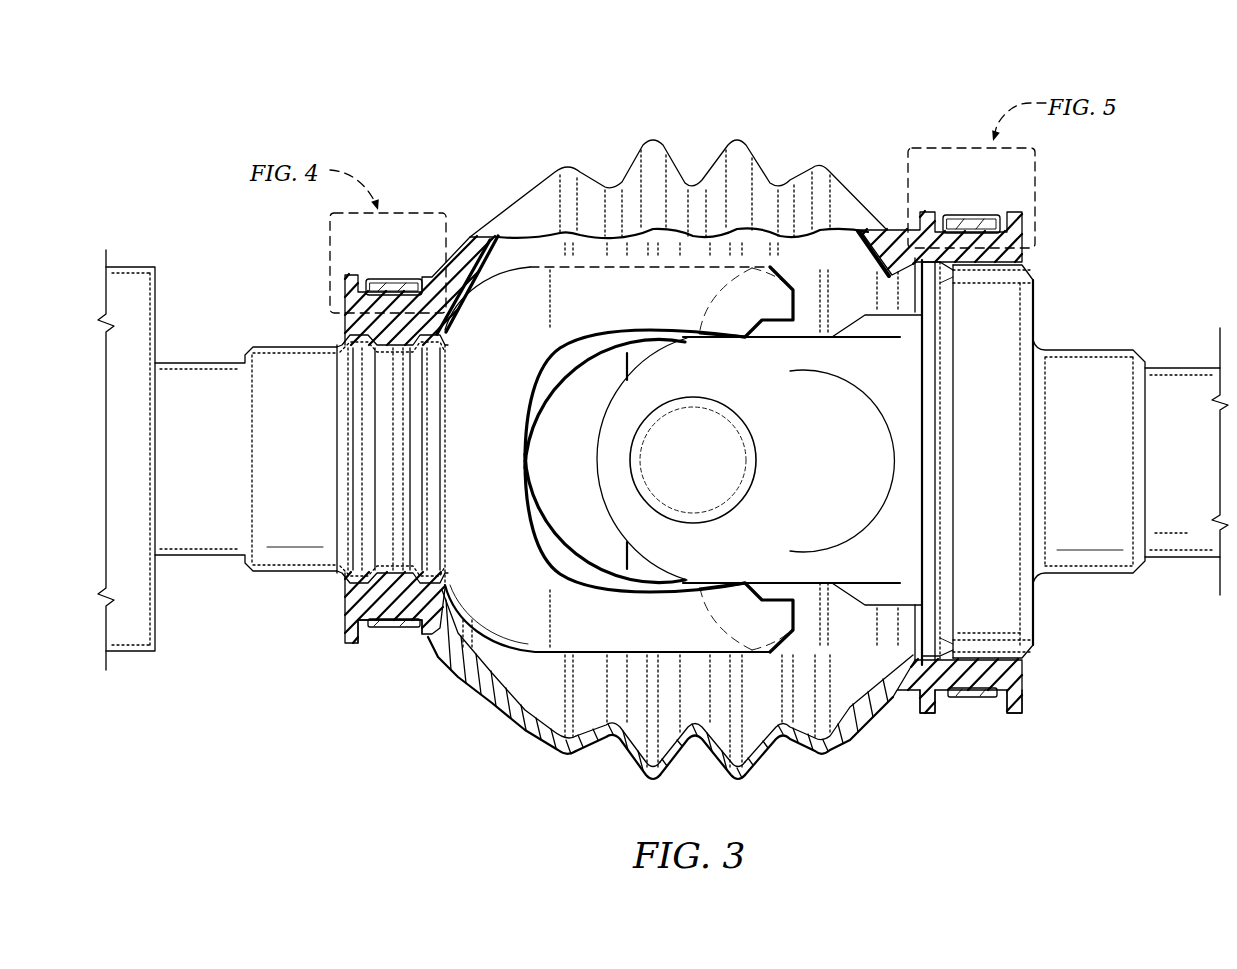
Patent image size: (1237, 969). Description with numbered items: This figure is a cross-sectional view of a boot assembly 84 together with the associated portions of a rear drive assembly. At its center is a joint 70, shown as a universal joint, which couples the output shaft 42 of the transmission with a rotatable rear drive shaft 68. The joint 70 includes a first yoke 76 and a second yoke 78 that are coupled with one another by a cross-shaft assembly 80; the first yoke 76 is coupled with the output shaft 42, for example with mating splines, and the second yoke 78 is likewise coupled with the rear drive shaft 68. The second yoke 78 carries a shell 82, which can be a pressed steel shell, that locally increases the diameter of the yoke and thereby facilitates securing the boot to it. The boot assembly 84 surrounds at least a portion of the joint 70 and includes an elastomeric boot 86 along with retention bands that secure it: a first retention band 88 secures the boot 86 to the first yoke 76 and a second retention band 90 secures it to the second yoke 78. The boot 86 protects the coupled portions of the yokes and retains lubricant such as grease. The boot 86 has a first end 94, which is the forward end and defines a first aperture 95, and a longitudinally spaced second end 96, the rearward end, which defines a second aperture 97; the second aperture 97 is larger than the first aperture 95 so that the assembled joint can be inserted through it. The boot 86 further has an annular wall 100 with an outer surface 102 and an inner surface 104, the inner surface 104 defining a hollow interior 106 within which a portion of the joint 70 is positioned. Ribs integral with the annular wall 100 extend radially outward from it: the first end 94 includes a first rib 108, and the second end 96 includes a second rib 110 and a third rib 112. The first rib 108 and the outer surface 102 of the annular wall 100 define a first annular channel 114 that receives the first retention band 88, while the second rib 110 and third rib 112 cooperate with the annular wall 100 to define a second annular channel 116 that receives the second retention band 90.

The output shaft 42 is at (212, 362).
The rear drive shaft 68 is at (1172, 366).
The joint 70 is at (1100, 334).
The first yoke 76 is at (491, 476).
The second yoke 78 is at (825, 476).
The cross-shaft assembly 80 is at (706, 476).
The shell 82 is at (1002, 322).
The boot assembly 84 is at (808, 84).
The boot 86 is at (647, 115).
The first retention band 88 is at (415, 276).
The second retention band 90 is at (963, 212).
The first end 94 is at (325, 614).
The first aperture 95 is at (392, 578).
The second end 96 is at (1038, 691).
The second aperture 97 is at (990, 657).
The annular wall 100 is at (762, 774).
The outer surface 102 is at (627, 760).
The inner surface 104 is at (553, 720).
The hollow interior 106 is at (805, 710).
The first rib 108 is at (357, 642).
The second rib 110 is at (930, 716).
The third rib 112 is at (1018, 716).
The first annular channel 114 is at (399, 653).
The second annular channel 116 is at (969, 730).